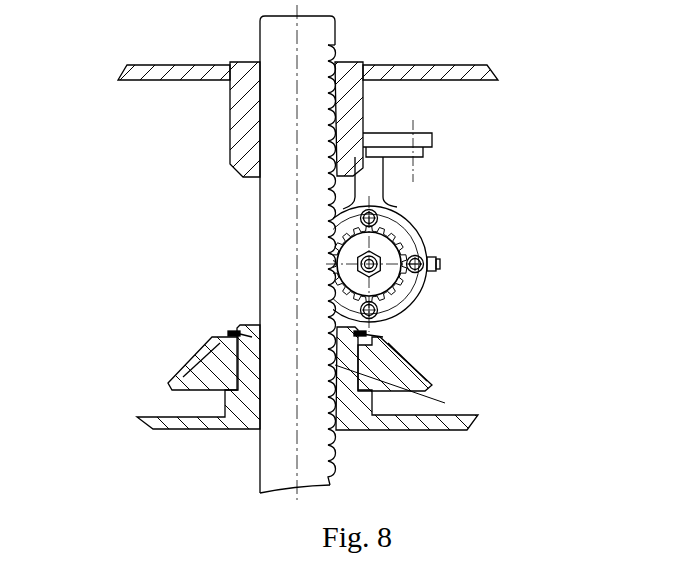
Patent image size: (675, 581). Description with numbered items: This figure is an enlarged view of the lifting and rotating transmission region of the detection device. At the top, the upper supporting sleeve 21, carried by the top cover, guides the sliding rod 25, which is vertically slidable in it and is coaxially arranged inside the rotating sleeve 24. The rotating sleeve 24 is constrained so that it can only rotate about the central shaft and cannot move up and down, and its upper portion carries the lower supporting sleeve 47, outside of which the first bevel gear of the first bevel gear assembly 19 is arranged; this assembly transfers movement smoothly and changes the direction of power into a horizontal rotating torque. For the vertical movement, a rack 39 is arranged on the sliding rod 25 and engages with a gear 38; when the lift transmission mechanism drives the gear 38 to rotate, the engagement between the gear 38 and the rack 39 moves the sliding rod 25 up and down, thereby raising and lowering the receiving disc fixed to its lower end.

The upper supporting sleeve 21 is at (230, 135).
The lower supporting sleeve 47 is at (249, 337).
The first bevel gear assembly 19 is at (200, 378).
The rotating sleeve 24 is at (152, 429).
The gear 38 is at (392, 258).
The sliding rod 25 is at (303, 400).
The rack 39 is at (333, 452).